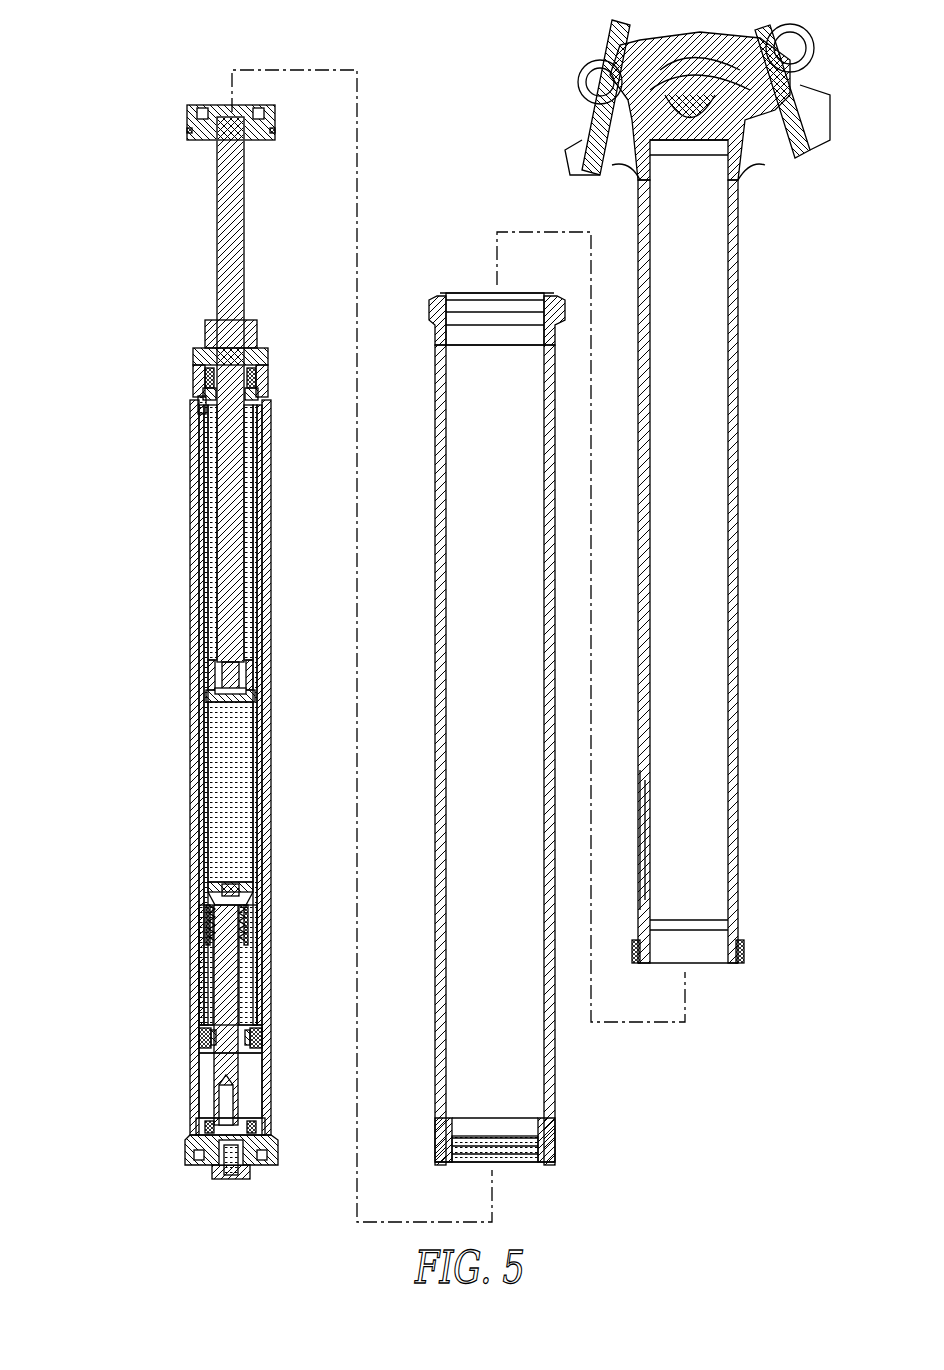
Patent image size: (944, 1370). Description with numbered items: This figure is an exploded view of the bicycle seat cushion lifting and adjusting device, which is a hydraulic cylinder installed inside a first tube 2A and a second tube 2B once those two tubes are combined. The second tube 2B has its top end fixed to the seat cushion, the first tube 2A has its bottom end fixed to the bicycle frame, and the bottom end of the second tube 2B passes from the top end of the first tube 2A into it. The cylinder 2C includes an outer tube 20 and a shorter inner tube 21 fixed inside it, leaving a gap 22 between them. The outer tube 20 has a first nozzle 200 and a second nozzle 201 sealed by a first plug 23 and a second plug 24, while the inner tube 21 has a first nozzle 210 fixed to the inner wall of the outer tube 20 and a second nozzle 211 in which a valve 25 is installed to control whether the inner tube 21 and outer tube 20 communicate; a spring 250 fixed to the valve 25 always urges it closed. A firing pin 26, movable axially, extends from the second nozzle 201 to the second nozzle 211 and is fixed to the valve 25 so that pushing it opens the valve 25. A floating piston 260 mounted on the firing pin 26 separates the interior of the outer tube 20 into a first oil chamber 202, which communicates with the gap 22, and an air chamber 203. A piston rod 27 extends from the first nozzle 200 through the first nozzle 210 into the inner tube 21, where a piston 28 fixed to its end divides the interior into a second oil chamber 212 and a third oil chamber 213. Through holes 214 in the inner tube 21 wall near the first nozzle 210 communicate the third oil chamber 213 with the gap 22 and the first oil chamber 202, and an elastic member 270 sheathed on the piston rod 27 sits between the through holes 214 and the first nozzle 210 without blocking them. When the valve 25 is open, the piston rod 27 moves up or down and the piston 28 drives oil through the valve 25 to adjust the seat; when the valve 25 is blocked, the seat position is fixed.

The first tube 2A is at (437, 508).
The second tube 2B is at (738, 357).
The cylinder 2C is at (160, 672).
The outer tube 20 is at (268, 493).
The inner tube 21 is at (258, 420).
The gap 22 is at (262, 450).
The first plug 23 is at (205, 332).
The second plug 24 is at (252, 1150).
The valve 25 is at (236, 888).
The firing pin 26 is at (230, 978).
The piston rod 27 is at (230, 240).
The piston 28 is at (240, 695).
The first nozzle 200 is at (197, 380).
The second nozzle 201 is at (262, 1122).
The first oil chamber 202 is at (250, 955).
The air chamber 203 is at (245, 1075).
The first nozzle 210 is at (268, 378).
The second nozzle 211 is at (256, 893).
The second oil chamber 212 is at (250, 560).
The third oil chamber 213 is at (230, 730).
The through holes 214 is at (196, 398).
The spring 250 is at (242, 921).
The floating piston 260 is at (250, 1037).
The elastic member 270 is at (207, 400).